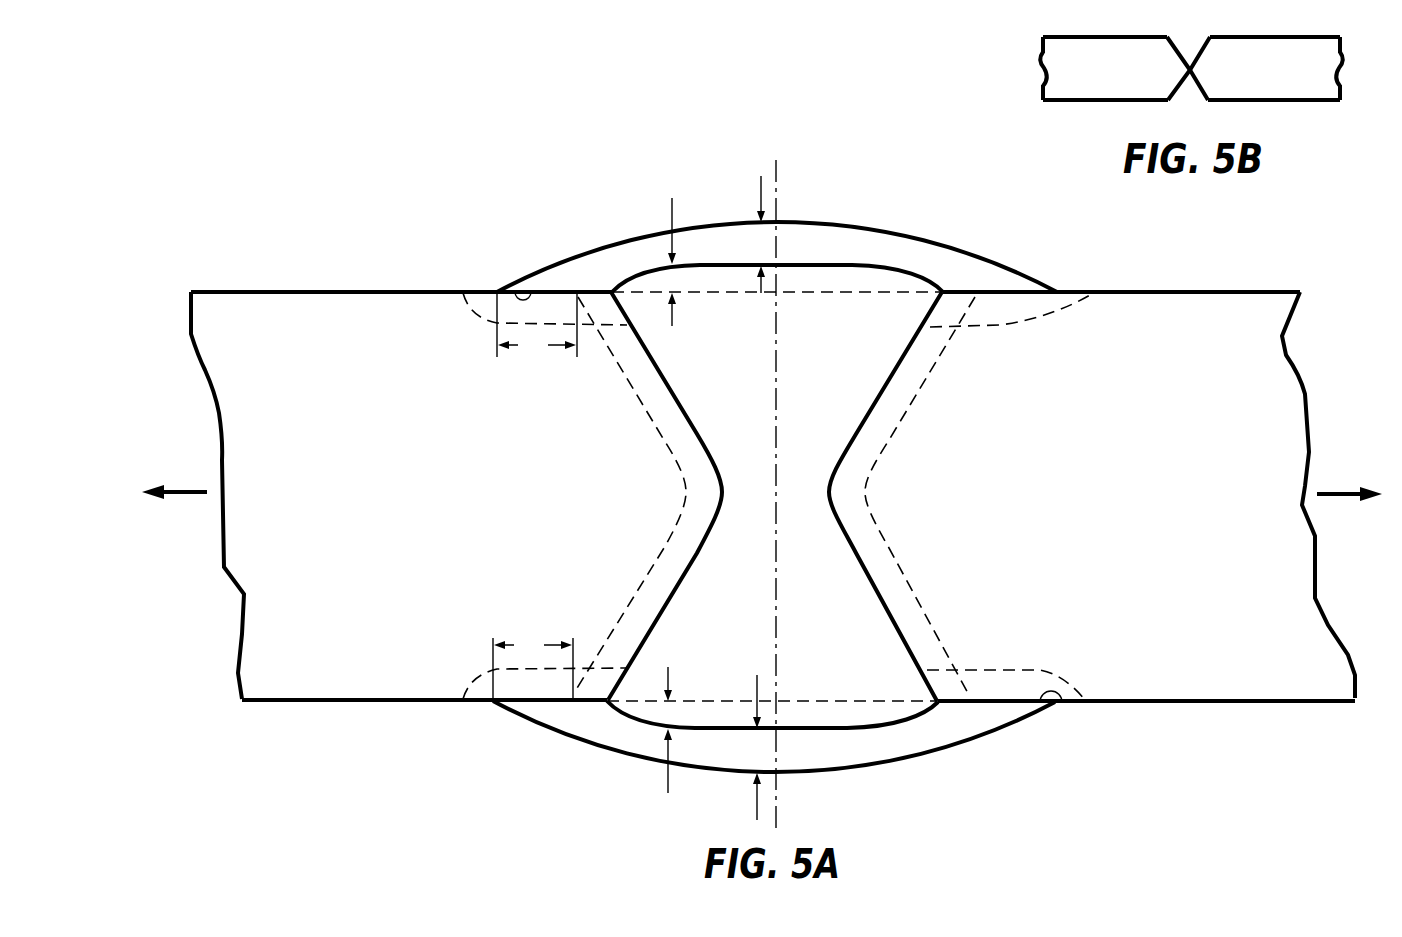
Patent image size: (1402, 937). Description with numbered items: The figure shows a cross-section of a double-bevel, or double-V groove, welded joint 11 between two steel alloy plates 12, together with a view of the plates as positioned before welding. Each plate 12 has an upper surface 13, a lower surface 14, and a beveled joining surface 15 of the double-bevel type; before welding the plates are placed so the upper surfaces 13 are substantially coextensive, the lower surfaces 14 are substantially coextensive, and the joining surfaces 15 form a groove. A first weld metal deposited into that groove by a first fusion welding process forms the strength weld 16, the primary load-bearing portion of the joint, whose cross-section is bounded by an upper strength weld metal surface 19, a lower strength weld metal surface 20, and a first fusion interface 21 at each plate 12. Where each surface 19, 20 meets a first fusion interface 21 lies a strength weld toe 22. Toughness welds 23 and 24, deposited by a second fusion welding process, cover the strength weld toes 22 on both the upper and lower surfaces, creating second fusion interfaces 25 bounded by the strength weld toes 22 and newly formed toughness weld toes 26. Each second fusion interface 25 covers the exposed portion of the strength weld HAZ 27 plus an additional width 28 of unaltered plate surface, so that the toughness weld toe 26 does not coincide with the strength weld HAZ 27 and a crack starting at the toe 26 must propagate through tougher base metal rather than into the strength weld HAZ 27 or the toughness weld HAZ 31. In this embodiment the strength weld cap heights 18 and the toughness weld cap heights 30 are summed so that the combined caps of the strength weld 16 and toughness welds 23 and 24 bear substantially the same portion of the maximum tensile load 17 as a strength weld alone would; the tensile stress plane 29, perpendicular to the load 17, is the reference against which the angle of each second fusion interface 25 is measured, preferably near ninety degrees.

In FIG. 5A, the welded joint 11 is at (503, 176).
In FIG. 5A, the steel alloy plate 12 is at (398, 307).
In FIG. 5A, the upper surface 13 is at (272, 288).
In FIG. 5B, the upper surface 13 is at (1092, 33).
In FIG. 5A, the lower surface 14 is at (383, 703).
In FIG. 5B, the lower surface 14 is at (1098, 103).
In FIG. 5B, the beveled joining surface 15 is at (1183, 47).
In FIG. 5A, the strength weld 16 is at (880, 312).
In FIG. 5A, the maximum tensile load 17 is at (190, 495).
In FIG. 5A, the strength weld cap height 18 is at (672, 206).
In FIG. 5A, the upper strength weld metal surface 19 is at (840, 262).
In FIG. 5A, the lower strength weld metal surface 20 is at (803, 730).
In FIG. 5A, the first fusion interface 21 is at (933, 330).
In FIG. 5A, the strength weld toe 22 is at (623, 357).
In FIG. 5A, the toughness weld 23 is at (1012, 275).
In FIG. 5A, the toughness weld 24 is at (888, 748).
In FIG. 5A, the second fusion interface 25 is at (523, 292).
In FIG. 5A, the toughness weld toe 26 is at (493, 291).
In FIG. 5A, the strength weld HAZ 27 is at (615, 345).
In FIG. 5A, the additional width 28 is at (535, 496).
In FIG. 5A, the tensile stress plane 29 is at (779, 180).
In FIG. 5A, the toughness weld cap height 30 is at (761, 186).
In FIG. 5A, the toughness weld HAZ 31 is at (1085, 300).